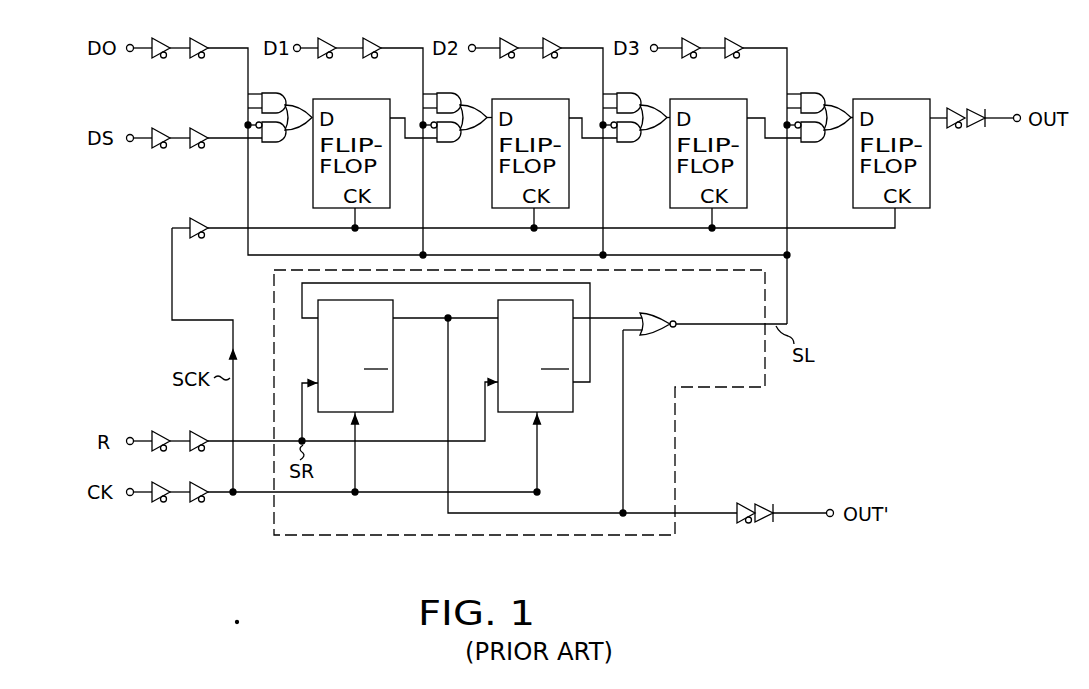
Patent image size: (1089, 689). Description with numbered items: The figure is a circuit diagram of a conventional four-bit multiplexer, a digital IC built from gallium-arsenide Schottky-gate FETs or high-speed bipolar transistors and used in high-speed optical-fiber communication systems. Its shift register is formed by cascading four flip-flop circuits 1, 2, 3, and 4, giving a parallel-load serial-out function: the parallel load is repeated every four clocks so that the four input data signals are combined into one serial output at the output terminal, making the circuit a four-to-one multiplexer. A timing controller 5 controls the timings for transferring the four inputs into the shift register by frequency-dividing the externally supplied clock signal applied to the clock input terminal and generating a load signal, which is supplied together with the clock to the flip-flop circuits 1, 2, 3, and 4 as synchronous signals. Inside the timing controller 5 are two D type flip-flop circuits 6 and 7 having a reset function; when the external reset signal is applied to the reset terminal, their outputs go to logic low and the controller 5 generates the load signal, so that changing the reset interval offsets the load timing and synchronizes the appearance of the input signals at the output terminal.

The flip-flop circuit 1 is at (351, 100).
The flip-flop circuit 2 is at (529, 100).
The flip-flop circuit 3 is at (708, 100).
The flip-flop circuit 4 is at (892, 100).
The timing controller 5 is at (766, 376).
The D type flip-flop circuit 6 is at (394, 378).
The D type flip-flop circuit 7 is at (560, 414).